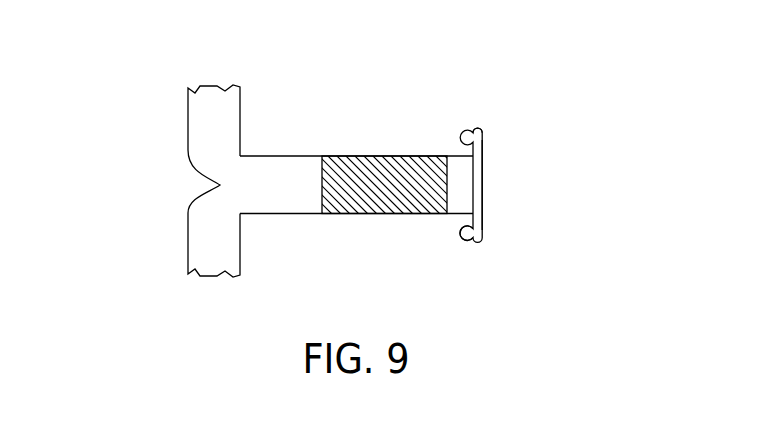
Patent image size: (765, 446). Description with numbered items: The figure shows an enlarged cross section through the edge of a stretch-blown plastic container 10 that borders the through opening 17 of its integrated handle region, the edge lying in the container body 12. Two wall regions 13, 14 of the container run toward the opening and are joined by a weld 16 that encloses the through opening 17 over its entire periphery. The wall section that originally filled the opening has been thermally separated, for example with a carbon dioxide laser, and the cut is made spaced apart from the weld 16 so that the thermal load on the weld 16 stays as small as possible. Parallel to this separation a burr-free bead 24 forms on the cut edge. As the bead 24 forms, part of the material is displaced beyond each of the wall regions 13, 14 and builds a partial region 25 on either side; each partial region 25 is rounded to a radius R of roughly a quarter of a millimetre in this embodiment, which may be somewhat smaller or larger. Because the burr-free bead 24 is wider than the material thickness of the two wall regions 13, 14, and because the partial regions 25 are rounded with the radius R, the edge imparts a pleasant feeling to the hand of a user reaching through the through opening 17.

The plastic container 10 is at (338, 191).
The container body 12 is at (212, 113).
The wall region 13 is at (290, 168).
The wall region 14 is at (290, 205).
The weld 16 is at (378, 162).
The through opening 17 is at (483, 205).
The burr-free bead 24 is at (513, 164).
The partial region 25 is at (480, 128).
The radius R is at (483, 265).